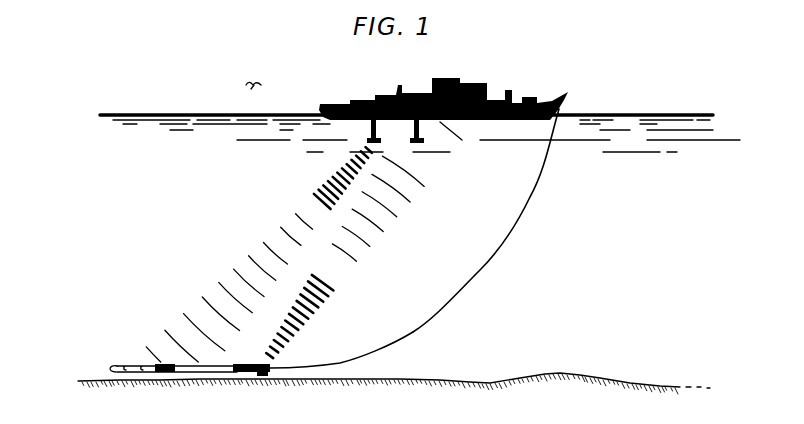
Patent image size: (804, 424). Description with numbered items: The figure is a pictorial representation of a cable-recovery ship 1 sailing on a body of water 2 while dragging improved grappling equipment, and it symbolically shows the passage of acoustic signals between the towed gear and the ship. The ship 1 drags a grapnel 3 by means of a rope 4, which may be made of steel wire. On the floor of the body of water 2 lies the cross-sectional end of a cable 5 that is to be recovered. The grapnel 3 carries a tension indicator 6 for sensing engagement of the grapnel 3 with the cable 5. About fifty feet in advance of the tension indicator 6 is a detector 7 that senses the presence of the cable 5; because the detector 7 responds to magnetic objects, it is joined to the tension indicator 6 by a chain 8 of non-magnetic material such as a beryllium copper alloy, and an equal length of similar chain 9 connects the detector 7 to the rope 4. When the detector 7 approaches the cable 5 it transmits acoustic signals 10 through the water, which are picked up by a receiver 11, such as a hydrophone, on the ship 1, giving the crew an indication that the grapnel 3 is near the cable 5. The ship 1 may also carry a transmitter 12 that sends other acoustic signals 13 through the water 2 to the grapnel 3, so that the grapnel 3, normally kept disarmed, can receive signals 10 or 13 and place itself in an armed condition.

The cable-recovery ship 1 is at (474, 89).
The body of water 2 is at (622, 114).
The grapnel 3 is at (112, 363).
The rope 4 is at (488, 264).
The cable 5 is at (266, 375).
The tension indicator 6 is at (164, 373).
The detector 7 is at (240, 372).
The chain 8 is at (193, 372).
The chain 9 is at (311, 366).
The acoustic signals 10 is at (340, 266).
The receiver 11 is at (395, 131).
The transmitter 12 is at (368, 142).
The acoustic signals 13 is at (287, 222).